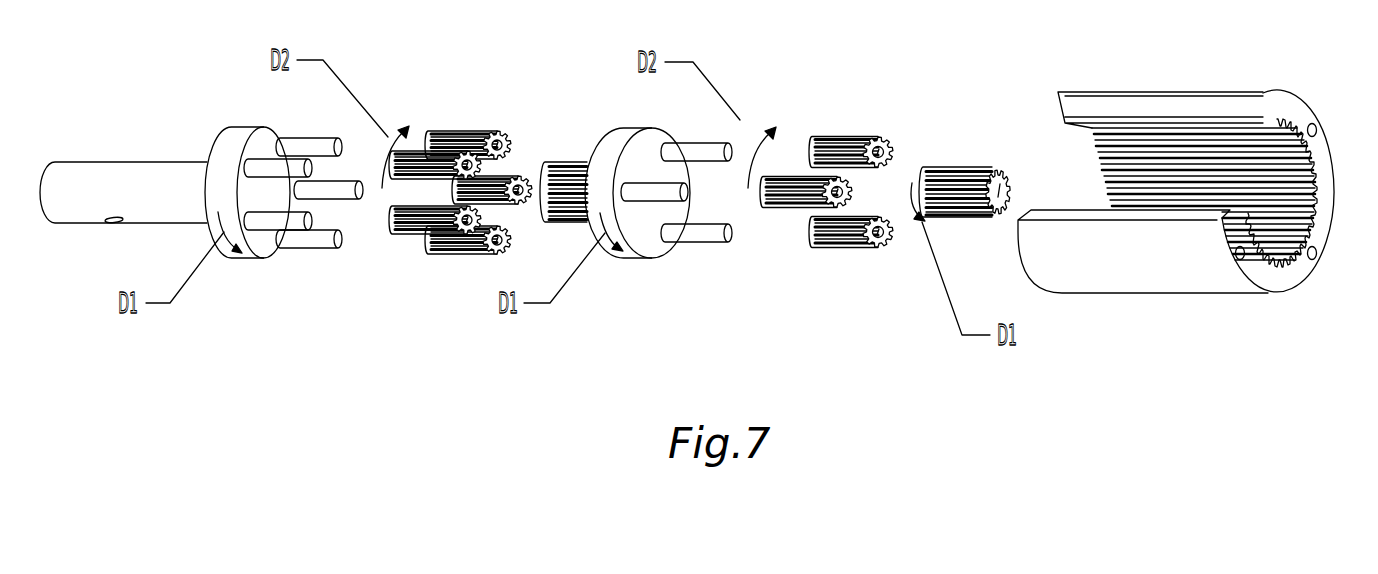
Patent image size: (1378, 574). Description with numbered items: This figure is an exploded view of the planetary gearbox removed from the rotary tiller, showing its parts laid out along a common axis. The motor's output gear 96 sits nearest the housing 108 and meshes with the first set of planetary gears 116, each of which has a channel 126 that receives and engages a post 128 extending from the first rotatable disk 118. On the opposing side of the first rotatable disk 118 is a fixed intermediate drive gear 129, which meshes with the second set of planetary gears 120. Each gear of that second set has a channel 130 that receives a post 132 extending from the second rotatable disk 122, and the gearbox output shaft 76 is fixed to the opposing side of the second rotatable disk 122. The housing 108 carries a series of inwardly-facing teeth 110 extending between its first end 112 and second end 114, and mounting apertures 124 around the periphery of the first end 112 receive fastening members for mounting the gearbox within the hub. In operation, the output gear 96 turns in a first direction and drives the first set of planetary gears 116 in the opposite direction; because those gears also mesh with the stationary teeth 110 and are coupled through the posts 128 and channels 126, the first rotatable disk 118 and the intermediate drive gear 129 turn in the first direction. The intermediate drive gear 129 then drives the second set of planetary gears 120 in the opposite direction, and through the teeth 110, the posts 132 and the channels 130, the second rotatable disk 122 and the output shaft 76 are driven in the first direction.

The gearbox output shaft 76 is at (125, 162).
The second rotatable disk 122 is at (217, 195).
The post 132 is at (293, 167).
The second set of planetary gears 120 is at (460, 164).
The channel 130 is at (517, 72).
The first rotatable disk 118 is at (627, 130).
The intermediate drive gear 129 is at (568, 162).
The post 128 is at (705, 147).
The first set of planetary gears 116 is at (826, 164).
The channel 126 is at (782, 72).
The output gear 96 is at (998, 167).
The housing 108 is at (1175, 91).
The inwardly-facing teeth 110 is at (1110, 165).
The first end 112 is at (1277, 296).
The mounting apertures 124 is at (1314, 122).
The second end 114 is at (1079, 296).